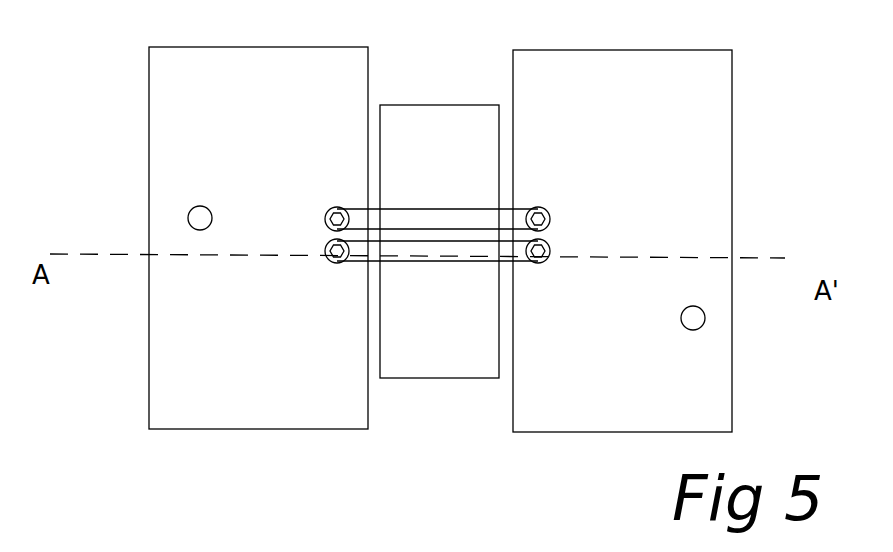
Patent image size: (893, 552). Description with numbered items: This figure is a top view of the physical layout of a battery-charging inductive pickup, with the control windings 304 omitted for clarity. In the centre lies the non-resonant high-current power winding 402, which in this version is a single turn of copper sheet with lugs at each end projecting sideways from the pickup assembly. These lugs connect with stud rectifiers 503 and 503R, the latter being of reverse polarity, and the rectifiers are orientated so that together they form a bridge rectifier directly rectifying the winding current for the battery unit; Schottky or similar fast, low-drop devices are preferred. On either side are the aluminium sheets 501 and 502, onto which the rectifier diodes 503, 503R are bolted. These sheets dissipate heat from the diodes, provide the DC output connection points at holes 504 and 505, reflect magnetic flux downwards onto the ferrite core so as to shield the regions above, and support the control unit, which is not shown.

The aluminium sheet 501 is at (216, 47).
The aluminium sheet 502 is at (637, 52).
The high-current winding 402 is at (437, 105).
The stud rectifier 503 is at (552, 226).
The stud rectifier (reverse) 503R is at (326, 213).
The hole 504 is at (200, 206).
The hole 505 is at (693, 330).
The control winding 304 is at (368, 547).